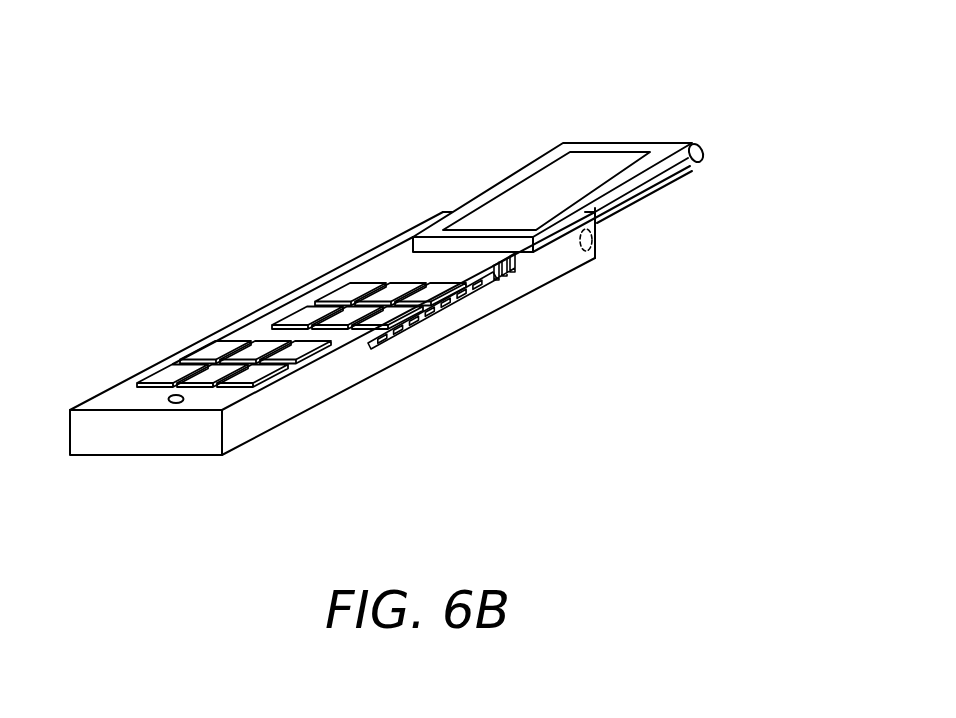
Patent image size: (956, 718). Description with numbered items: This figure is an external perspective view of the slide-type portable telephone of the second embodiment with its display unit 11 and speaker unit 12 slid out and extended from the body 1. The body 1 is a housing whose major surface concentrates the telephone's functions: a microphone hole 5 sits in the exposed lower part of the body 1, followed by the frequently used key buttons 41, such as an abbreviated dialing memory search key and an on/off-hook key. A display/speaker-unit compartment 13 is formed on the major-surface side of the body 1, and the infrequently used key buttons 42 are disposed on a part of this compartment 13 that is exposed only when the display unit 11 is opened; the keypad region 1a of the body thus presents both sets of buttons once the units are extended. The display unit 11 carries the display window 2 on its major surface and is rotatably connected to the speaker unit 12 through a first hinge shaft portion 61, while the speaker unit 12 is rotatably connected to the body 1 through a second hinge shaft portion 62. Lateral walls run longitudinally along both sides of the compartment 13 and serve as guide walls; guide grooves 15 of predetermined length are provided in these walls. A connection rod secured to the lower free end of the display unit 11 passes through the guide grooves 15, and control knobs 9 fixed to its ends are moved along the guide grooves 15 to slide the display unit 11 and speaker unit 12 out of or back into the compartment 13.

The body 1 is at (176, 355).
The keypad section 1a is at (305, 312).
The display window 2 is at (545, 185).
The microphone hole 5 is at (168, 400).
The control knobs 9 is at (505, 278).
The display unit 11 is at (497, 182).
The speaker unit 12 is at (658, 176).
The display/speaker-unit compartment 13 is at (405, 255).
The guide grooves 15 is at (398, 343).
The key buttons 41 is at (273, 368).
The key buttons 42 is at (307, 292).
The first hinge shaft portion 61 is at (695, 143).
The second hinge shaft portion 62 is at (586, 251).